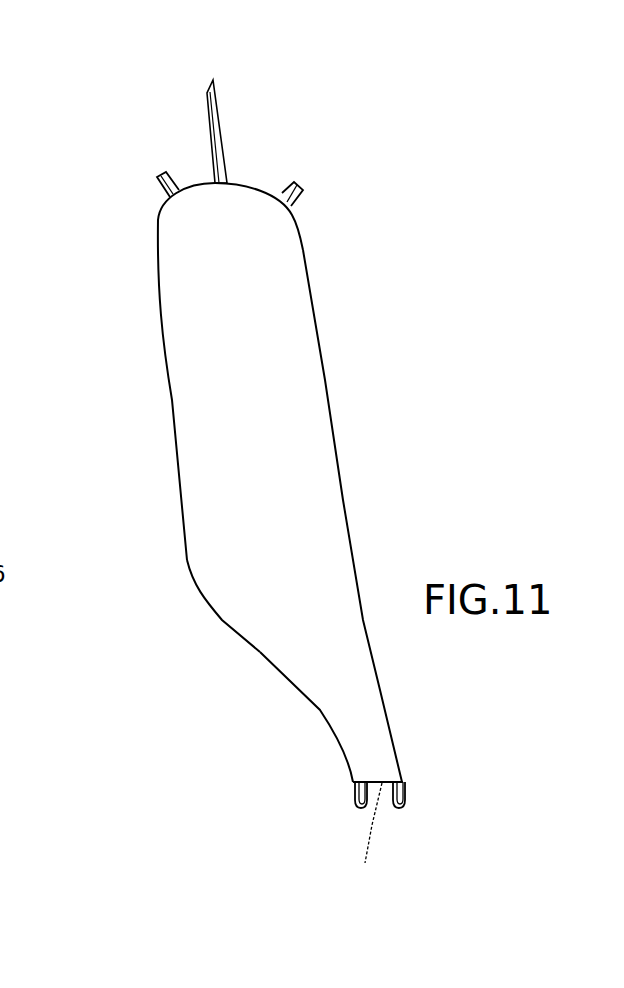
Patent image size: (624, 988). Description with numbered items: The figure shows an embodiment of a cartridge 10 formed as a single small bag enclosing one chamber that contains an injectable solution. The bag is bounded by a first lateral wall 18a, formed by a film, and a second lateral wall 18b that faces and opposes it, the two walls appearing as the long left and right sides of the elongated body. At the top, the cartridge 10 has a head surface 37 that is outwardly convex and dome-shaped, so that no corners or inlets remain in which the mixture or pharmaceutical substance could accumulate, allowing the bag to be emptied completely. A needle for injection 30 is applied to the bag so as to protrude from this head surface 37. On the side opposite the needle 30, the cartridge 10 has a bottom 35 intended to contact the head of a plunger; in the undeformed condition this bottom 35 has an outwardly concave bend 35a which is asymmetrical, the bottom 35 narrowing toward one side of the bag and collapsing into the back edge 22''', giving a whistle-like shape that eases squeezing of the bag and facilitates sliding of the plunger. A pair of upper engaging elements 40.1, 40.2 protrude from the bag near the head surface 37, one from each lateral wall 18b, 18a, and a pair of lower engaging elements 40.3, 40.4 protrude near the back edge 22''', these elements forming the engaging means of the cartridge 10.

The cartridge 10 is at (503, 356).
The first lateral wall 18a is at (328, 388).
The second lateral wall 18b is at (170, 382).
The back edge 22''' is at (364, 840).
The needle for injection 30 is at (210, 127).
The bottom 35 is at (194, 614).
The outward bend 35a is at (276, 670).
The head surface 37 is at (254, 185).
The upper engaging element 40.1 is at (160, 185).
The upper engaging element 40.2 is at (298, 192).
The lower engaging element 40.3 is at (353, 792).
The lower engaging element 40.4 is at (407, 803).